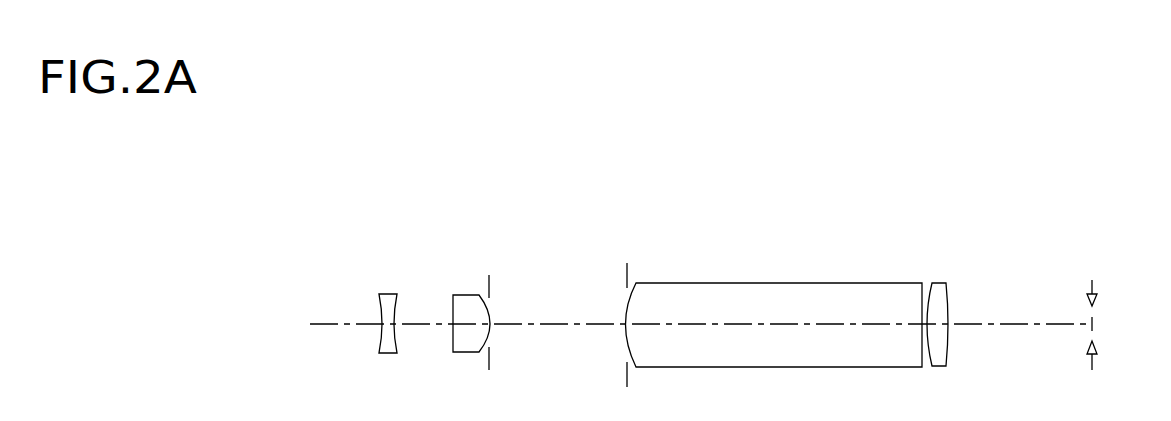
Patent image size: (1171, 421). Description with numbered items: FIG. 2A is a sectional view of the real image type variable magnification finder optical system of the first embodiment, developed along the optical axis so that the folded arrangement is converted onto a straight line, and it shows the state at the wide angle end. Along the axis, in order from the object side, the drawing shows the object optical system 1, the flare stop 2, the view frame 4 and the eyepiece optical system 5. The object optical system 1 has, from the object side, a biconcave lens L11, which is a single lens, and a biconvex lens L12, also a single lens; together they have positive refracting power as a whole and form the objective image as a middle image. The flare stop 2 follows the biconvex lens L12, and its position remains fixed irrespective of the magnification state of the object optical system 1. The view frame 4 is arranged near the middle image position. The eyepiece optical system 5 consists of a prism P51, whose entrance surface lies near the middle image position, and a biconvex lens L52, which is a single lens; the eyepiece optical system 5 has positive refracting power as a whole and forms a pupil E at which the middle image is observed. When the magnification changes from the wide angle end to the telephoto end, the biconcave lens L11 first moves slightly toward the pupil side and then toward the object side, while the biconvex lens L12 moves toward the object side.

The object optical system 1 is at (350, 208).
The biconcave lens L11 is at (389, 292).
The biconvex lens L12 is at (468, 293).
The flare stop 2 is at (492, 287).
The view frame 4 is at (626, 277).
The eyepiece optical system 5 is at (627, 208).
The prism P51 is at (784, 280).
The biconvex lens L52 is at (943, 282).
The pupil E is at (1088, 282).